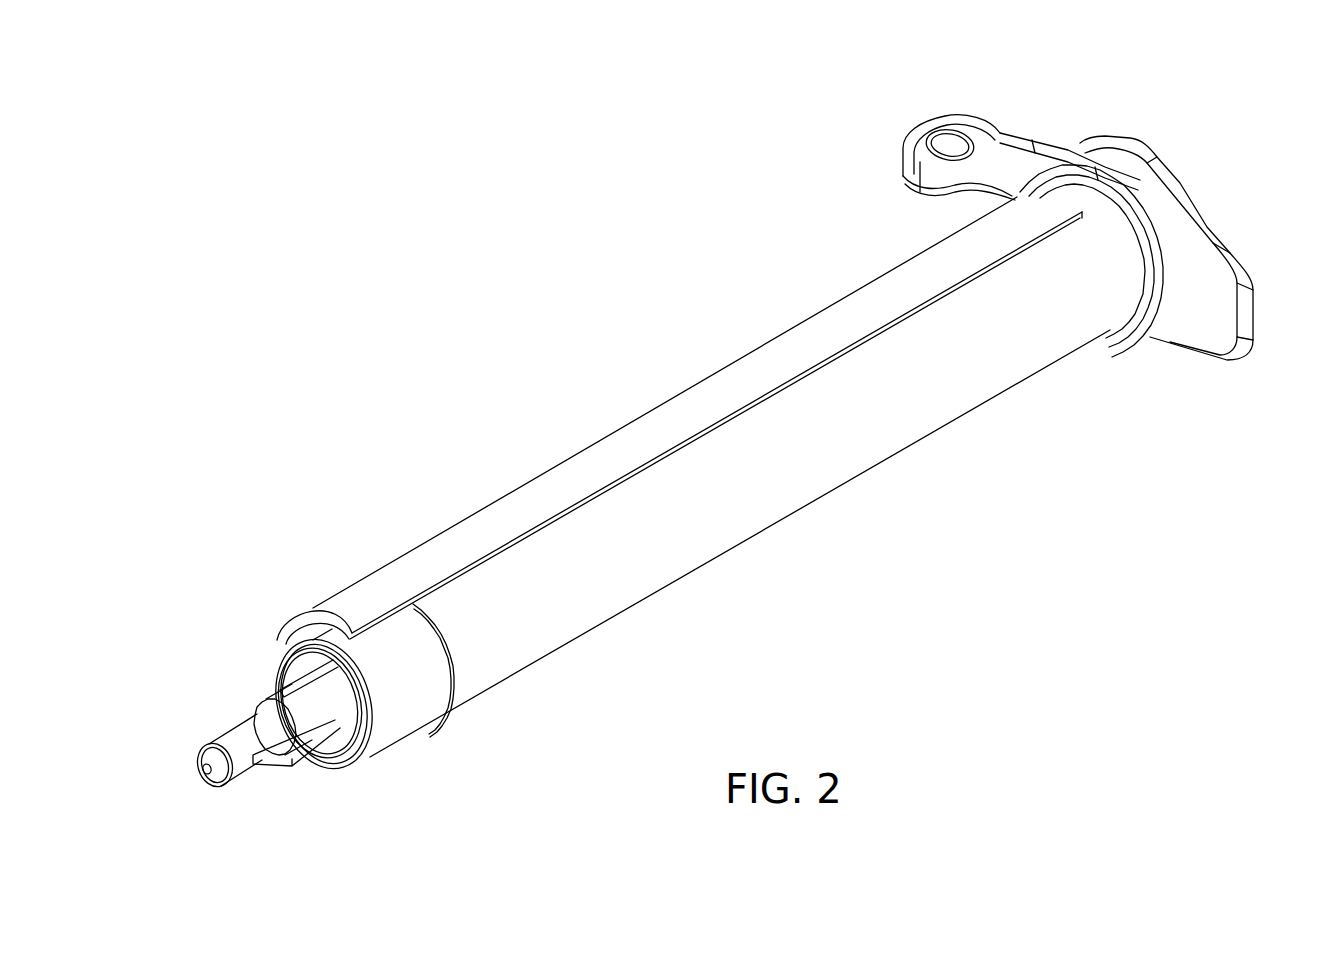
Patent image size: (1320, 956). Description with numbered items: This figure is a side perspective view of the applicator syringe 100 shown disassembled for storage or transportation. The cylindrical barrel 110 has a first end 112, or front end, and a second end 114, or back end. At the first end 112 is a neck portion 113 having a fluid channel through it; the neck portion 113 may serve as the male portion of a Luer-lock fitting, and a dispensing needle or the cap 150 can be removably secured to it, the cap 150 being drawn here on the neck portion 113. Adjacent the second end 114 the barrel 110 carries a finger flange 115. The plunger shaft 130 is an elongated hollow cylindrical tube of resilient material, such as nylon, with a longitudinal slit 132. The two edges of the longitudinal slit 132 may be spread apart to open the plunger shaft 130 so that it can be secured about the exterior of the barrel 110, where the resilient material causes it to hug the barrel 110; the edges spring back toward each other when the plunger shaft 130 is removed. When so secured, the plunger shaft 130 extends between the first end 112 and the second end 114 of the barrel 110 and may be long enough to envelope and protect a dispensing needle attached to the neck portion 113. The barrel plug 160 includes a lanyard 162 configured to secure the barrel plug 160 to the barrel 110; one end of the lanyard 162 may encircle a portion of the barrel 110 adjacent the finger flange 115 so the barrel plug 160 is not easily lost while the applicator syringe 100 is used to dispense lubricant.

The applicator syringe 100 is at (818, 477).
The barrel 110 is at (675, 545).
The first end 112 is at (478, 677).
The neck portion 113 is at (387, 713).
The second end 114 is at (1117, 292).
The finger flange 115 is at (1018, 163).
The plunger shaft 130 is at (472, 530).
The longitudinal slit 132 is at (800, 378).
The cap 150 is at (222, 746).
The barrel plug 160 is at (1135, 153).
The lanyard 162 is at (923, 130).